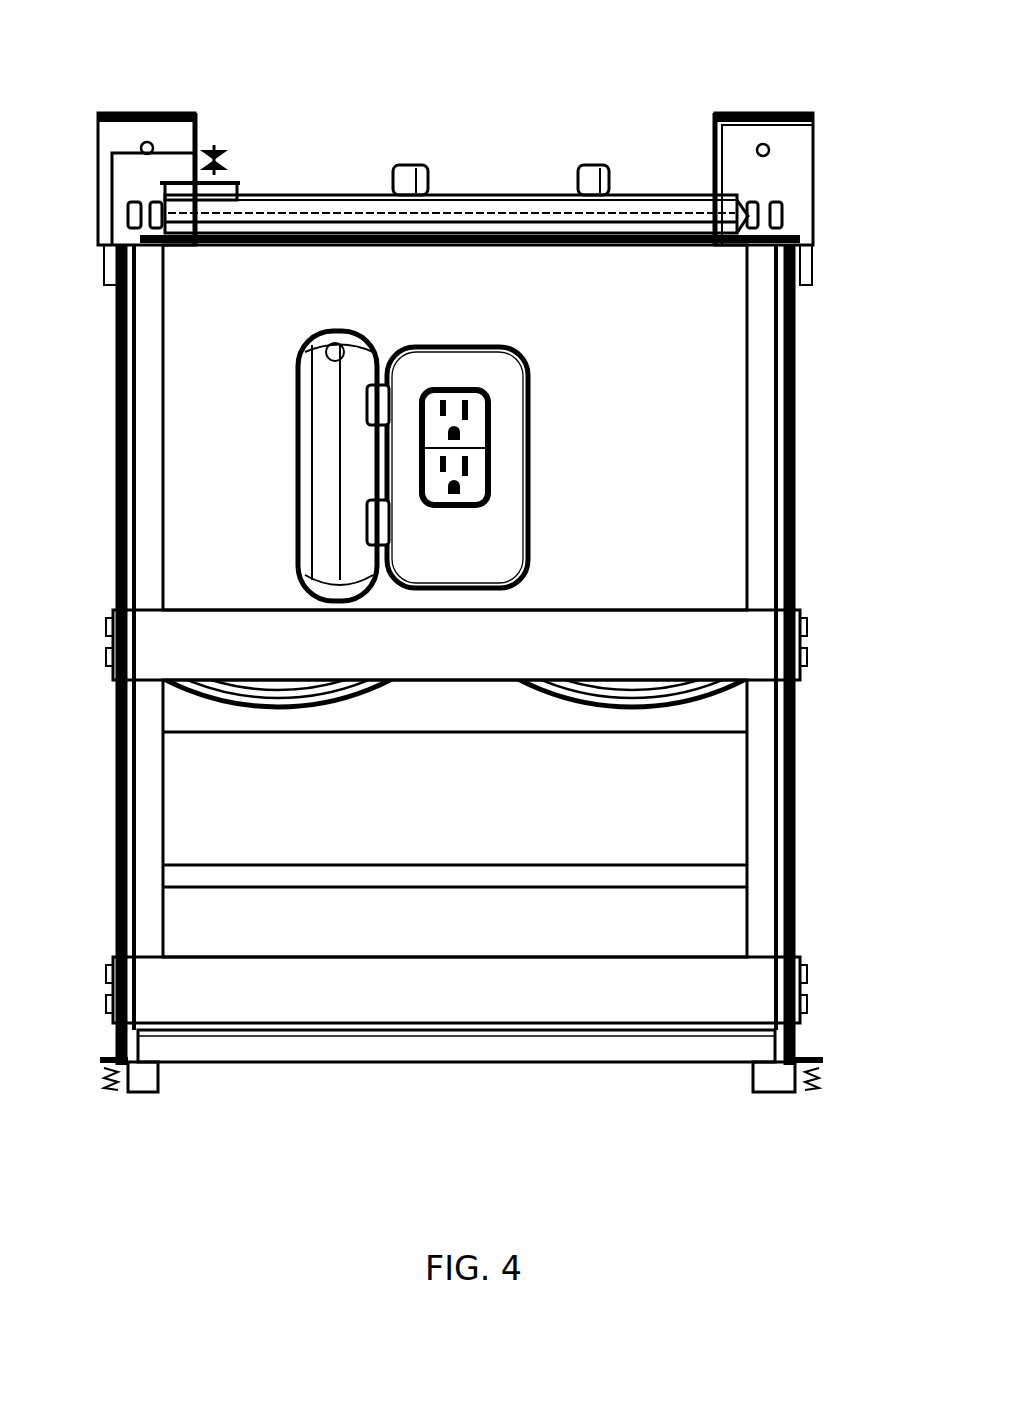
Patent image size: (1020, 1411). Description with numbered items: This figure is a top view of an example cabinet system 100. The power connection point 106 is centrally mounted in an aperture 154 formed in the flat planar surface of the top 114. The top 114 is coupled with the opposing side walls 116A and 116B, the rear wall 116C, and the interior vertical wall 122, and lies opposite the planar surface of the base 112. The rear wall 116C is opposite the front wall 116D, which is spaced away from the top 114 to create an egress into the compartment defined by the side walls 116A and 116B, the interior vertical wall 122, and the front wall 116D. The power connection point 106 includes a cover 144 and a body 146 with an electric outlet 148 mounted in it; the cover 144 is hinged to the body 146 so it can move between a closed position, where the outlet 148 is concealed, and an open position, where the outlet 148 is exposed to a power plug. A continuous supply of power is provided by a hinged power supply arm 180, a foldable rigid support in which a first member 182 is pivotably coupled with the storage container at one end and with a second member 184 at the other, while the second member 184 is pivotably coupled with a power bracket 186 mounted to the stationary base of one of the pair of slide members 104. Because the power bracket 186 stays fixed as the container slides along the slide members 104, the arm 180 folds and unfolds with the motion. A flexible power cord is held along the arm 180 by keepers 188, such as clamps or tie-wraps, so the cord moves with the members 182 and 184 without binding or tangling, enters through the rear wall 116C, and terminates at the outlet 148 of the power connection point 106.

The cabinet system 100 is at (800, 45).
The slide members 104 is at (142, 1077).
The power connection point 106 is at (578, 427).
The base 112 is at (690, 908).
The top 114 is at (680, 405).
The side wall 116A is at (157, 478).
The side wall 116B is at (752, 482).
The rear wall 116C is at (765, 238).
The front wall 116D is at (470, 1062).
The interior vertical wall 122 is at (412, 707).
The cover 144 is at (300, 358).
The body 146 is at (447, 548).
The electric outlet 148 is at (460, 432).
The aperture 154 is at (528, 500).
The hinged power supply arm 180 is at (435, 134).
The first member 182 is at (170, 245).
The second member 184 is at (328, 192).
The power bracket 186 is at (125, 150).
The keepers 188 is at (400, 165).